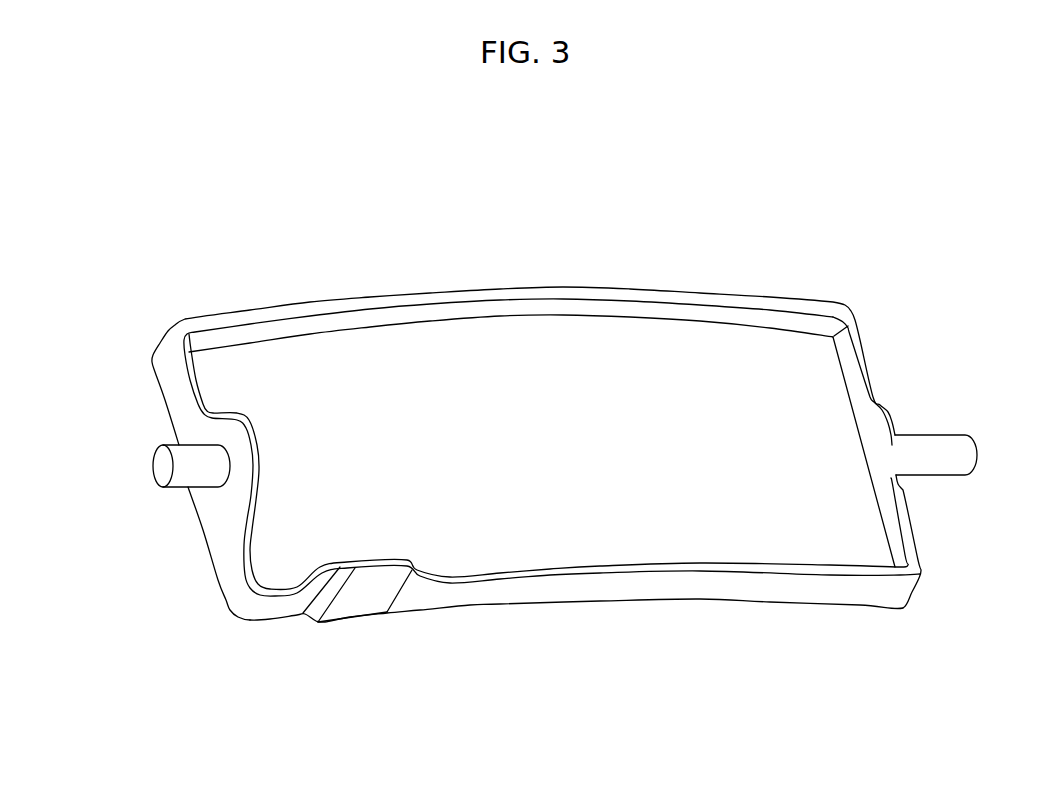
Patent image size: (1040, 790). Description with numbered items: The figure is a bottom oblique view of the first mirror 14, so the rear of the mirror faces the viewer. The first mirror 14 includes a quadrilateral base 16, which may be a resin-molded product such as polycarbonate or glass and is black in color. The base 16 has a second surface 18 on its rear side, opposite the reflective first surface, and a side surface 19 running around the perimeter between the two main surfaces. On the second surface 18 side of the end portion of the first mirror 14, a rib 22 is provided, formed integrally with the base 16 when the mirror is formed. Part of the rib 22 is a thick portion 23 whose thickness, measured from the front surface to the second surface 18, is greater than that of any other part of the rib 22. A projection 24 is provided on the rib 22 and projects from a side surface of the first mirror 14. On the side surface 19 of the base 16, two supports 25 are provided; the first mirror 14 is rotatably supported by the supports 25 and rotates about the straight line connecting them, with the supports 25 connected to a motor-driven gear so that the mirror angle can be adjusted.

The first mirror 14 is at (910, 229).
The base 16 is at (205, 507).
The second surface 18 is at (378, 350).
The side surface 19 is at (790, 595).
The rib 22 is at (915, 532).
The thick portion 23 is at (303, 613).
The projection 24 is at (385, 618).
The supports 25 is at (157, 450).